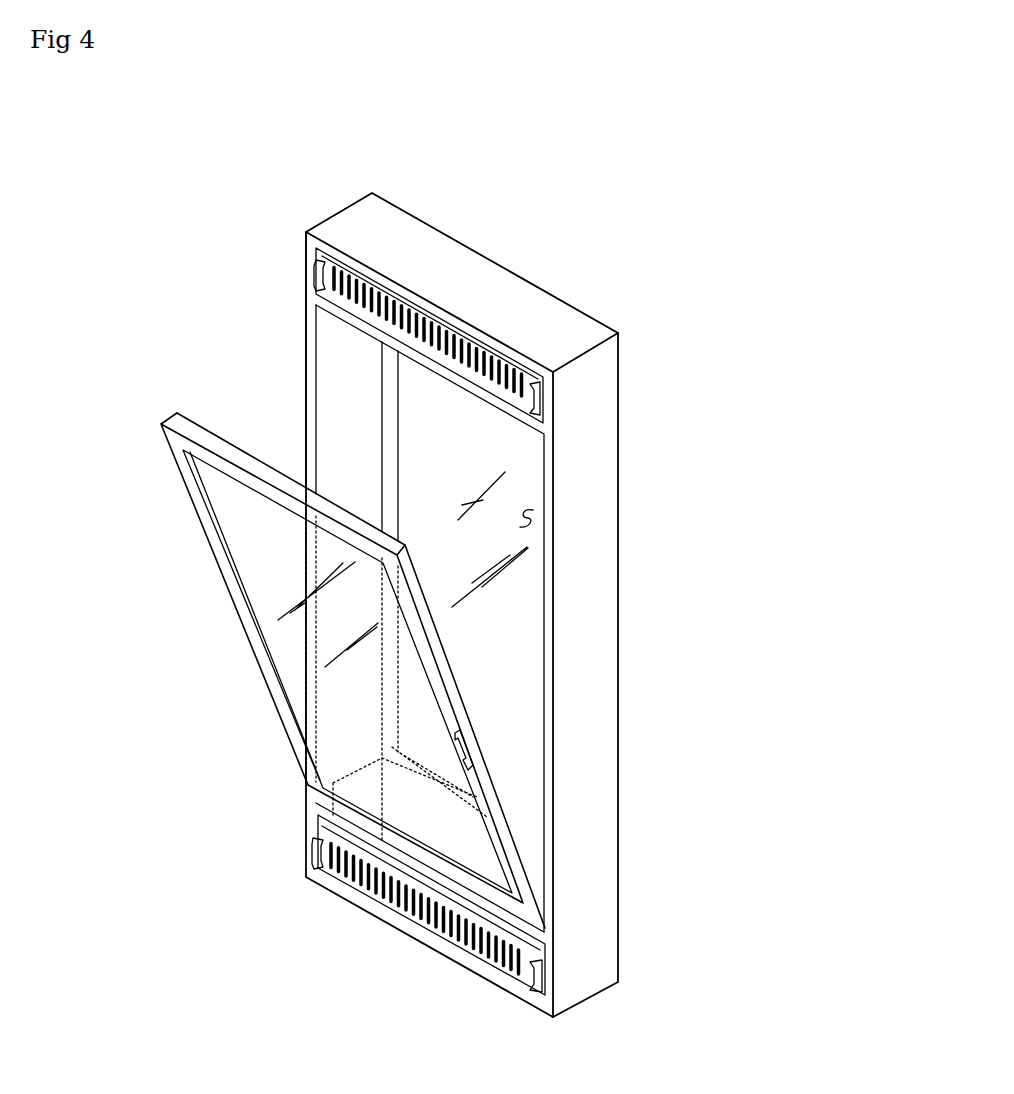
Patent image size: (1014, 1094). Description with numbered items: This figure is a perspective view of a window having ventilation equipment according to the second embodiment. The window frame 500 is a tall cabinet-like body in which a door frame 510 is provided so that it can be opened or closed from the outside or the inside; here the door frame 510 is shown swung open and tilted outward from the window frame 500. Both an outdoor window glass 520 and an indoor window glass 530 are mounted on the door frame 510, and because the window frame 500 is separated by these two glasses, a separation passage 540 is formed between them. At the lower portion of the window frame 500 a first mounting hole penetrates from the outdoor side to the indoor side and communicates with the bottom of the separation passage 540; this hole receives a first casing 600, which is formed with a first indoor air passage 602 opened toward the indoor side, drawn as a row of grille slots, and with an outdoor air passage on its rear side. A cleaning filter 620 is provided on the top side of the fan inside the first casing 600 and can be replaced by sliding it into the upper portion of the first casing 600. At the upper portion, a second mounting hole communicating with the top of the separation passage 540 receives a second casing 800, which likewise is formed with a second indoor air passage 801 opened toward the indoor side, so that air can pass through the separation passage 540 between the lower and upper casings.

The window frame 500 is at (608, 649).
The door frame 510 is at (205, 518).
The outdoor window glass 520 is at (530, 722).
The indoor window glass 530 is at (267, 600).
The separation passage 540 is at (545, 527).
The first casing 600 is at (543, 978).
The first indoor air passage 602 is at (473, 950).
The cleaning filter 620 is at (535, 947).
The second casing 800 is at (540, 400).
The second indoor air passage 801 is at (505, 367).